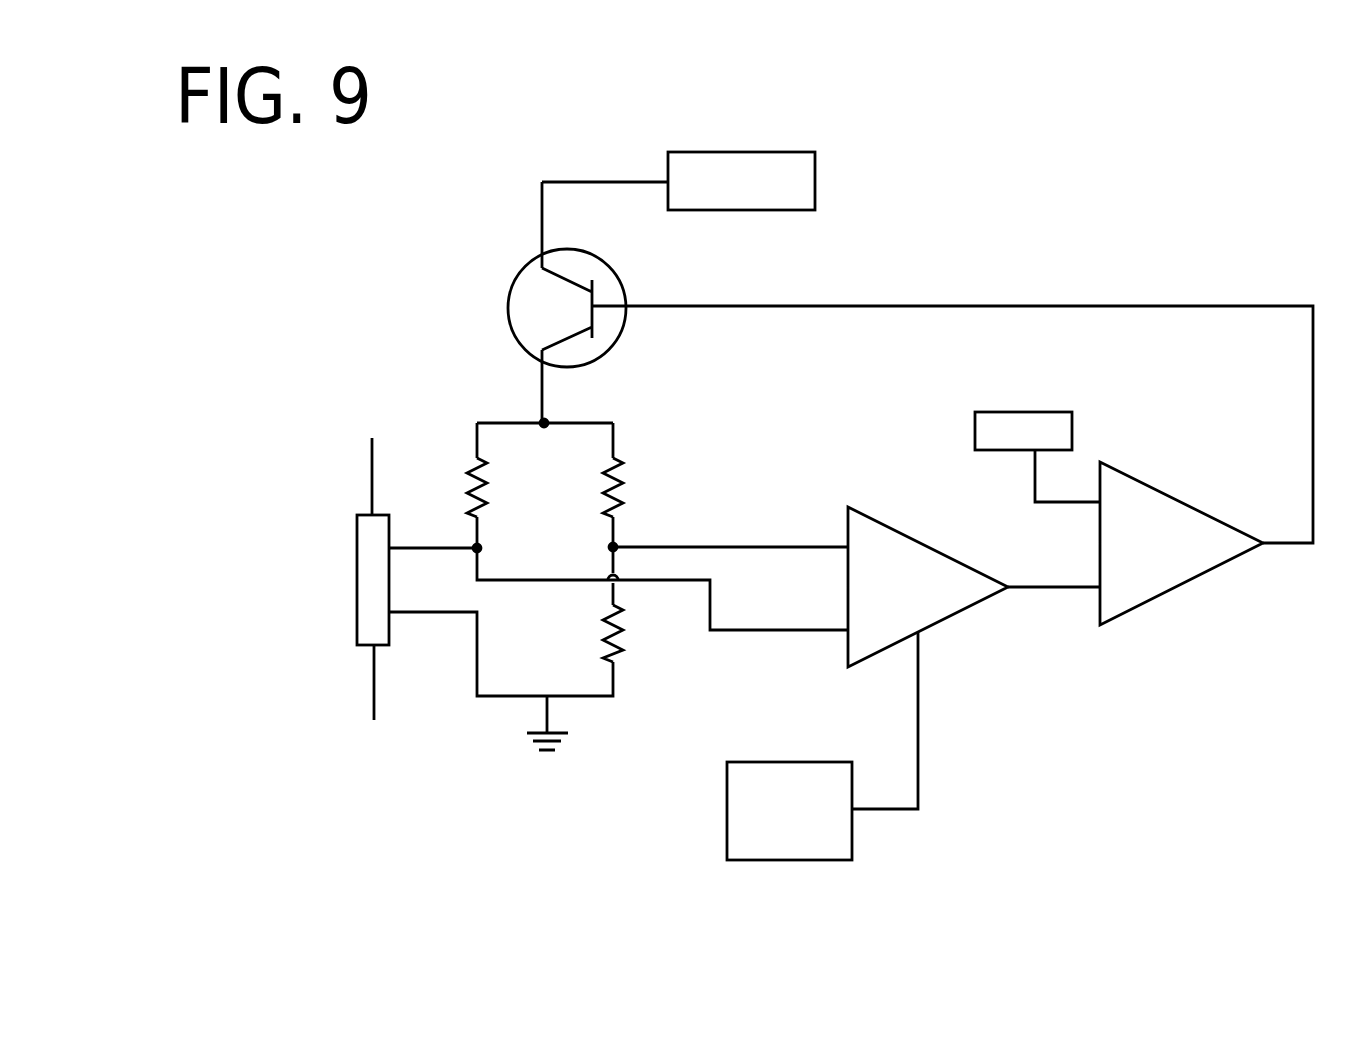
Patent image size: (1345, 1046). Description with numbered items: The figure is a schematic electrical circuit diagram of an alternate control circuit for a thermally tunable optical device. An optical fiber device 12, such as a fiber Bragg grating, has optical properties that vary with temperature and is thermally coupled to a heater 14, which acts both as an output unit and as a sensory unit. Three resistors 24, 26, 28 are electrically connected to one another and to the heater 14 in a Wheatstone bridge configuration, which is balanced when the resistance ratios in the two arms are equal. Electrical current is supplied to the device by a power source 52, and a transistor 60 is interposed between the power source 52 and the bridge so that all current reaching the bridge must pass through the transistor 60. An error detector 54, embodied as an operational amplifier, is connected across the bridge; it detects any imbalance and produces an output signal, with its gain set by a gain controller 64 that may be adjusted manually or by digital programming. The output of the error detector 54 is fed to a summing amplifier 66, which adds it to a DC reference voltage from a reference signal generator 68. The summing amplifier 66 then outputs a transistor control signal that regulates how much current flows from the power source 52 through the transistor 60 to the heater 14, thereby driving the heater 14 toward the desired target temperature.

The optical fiber device 12 is at (372, 474).
The heater 14 is at (357, 610).
The resistor 24 is at (470, 480).
The resistor 26 is at (614, 512).
The resistor 28 is at (620, 650).
The power source 52 is at (815, 182).
The error detector 54 is at (945, 622).
The transistor 60 is at (610, 350).
The gain controller 64 is at (727, 825).
The summing amplifier 66 is at (1178, 587).
The reference signal generator 68 is at (975, 432).